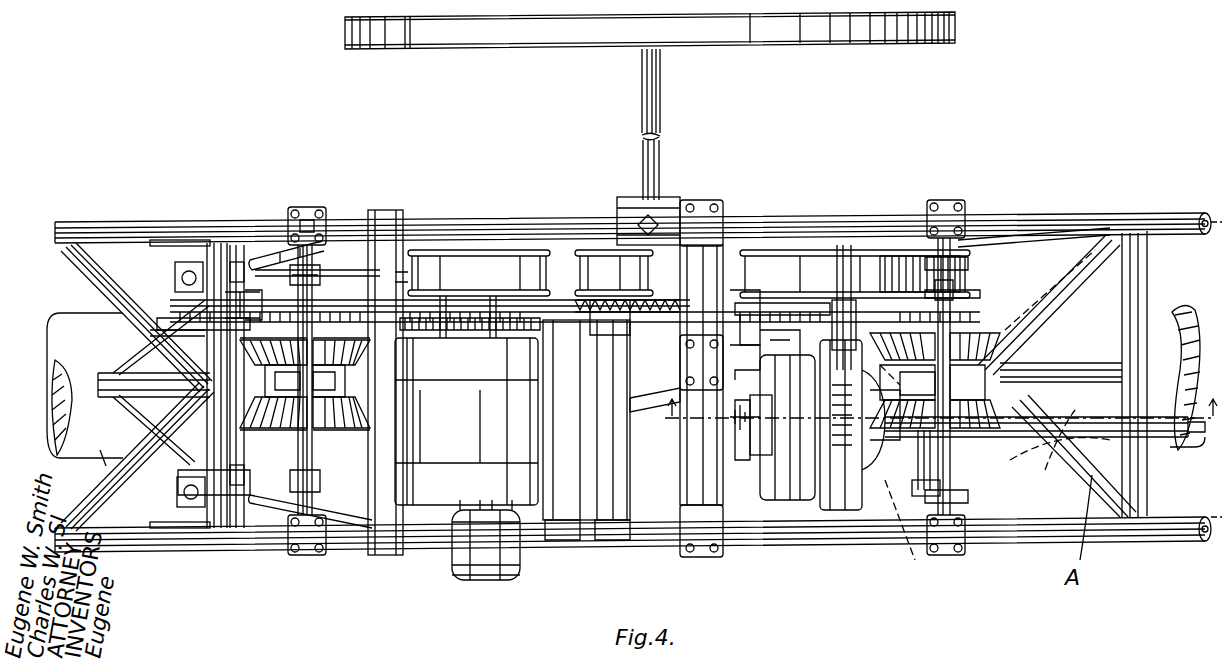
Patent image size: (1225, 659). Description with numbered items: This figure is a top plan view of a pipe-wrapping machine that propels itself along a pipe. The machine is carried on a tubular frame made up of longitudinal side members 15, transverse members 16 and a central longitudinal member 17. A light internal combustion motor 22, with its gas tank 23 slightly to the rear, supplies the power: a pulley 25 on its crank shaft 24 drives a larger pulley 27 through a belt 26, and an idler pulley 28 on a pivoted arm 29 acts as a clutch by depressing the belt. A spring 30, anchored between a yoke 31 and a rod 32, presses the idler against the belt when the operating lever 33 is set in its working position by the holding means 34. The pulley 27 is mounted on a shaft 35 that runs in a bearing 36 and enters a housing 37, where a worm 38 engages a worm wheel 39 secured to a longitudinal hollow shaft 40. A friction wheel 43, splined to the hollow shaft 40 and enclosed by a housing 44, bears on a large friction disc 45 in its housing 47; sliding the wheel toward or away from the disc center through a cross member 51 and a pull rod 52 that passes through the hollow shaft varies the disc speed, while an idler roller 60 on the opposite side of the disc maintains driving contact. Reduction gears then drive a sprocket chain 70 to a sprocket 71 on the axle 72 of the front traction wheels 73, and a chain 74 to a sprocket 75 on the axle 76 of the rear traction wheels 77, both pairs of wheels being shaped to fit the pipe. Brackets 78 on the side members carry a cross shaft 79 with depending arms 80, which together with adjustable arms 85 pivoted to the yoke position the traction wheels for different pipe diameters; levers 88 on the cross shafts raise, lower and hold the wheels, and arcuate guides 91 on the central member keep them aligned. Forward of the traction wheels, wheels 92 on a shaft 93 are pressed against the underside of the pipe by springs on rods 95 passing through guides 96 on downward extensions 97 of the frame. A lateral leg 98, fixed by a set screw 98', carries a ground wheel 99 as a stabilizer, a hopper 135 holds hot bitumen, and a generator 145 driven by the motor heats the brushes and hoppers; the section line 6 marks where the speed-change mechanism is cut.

The section line 6- 6 is at (937, 395).
The longitudinal side members 15 is at (470, 222).
The transverse members 16 is at (1147, 275).
The central longitudinal member 17 is at (108, 398).
The motor 22 is at (452, 485).
The gas tank 23 is at (604, 520).
The crank shaft 24 is at (480, 320).
The pulley 25 is at (515, 252).
The belt 26 is at (558, 300).
The pulley 27 is at (843, 248).
The idler pulley 28 is at (603, 250).
The pivoted arm 29 is at (592, 320).
The spring 30 is at (650, 300).
The yoke 31 is at (700, 275).
The rod 32 is at (425, 310).
The operating lever 33 is at (237, 300).
The holding means 34 is at (250, 320).
The shaft 35 is at (865, 310).
The bearing 36 is at (856, 325).
The housing 37 is at (865, 490).
The worm 38 is at (795, 495).
The worm wheel 39 is at (890, 477).
The hollow shaft 40 is at (985, 440).
The friction wheel 43 is at (780, 510).
The housing 44 is at (740, 505).
The friction disc 45 is at (779, 350).
The housing 47 is at (668, 398).
The cross member 51 is at (740, 432).
The pull rod 52 is at (1185, 450).
The idler roller 60 is at (790, 290).
The sprocket chain 70 is at (443, 320).
The sprocket 71 is at (336, 305).
The axle 72 is at (318, 445).
The front traction wheels 73 is at (345, 395).
The chain 74 is at (760, 290).
The sprocket 75 is at (963, 290).
The axle 76 is at (932, 455).
The rear traction wheels 77 is at (918, 375).
The brackets 78 is at (310, 207).
The cross shaft 79 is at (298, 440).
The depending arms 80 is at (330, 235).
The arms 85 is at (360, 270).
The levers 88 is at (300, 213).
The arcuate guides 91 is at (350, 420).
The wheels 92 is at (178, 300).
The shaft 93 is at (185, 395).
The rods 95 is at (190, 272).
The yokes or guides 96 is at (186, 262).
The downward extensions 97 is at (205, 235).
The leg or axle 98 is at (629, 124).
The set screw 98' is at (668, 195).
The wheel 99 is at (795, 44).
The tank or hopper 135 is at (1047, 463).
The generator 145 is at (520, 562).